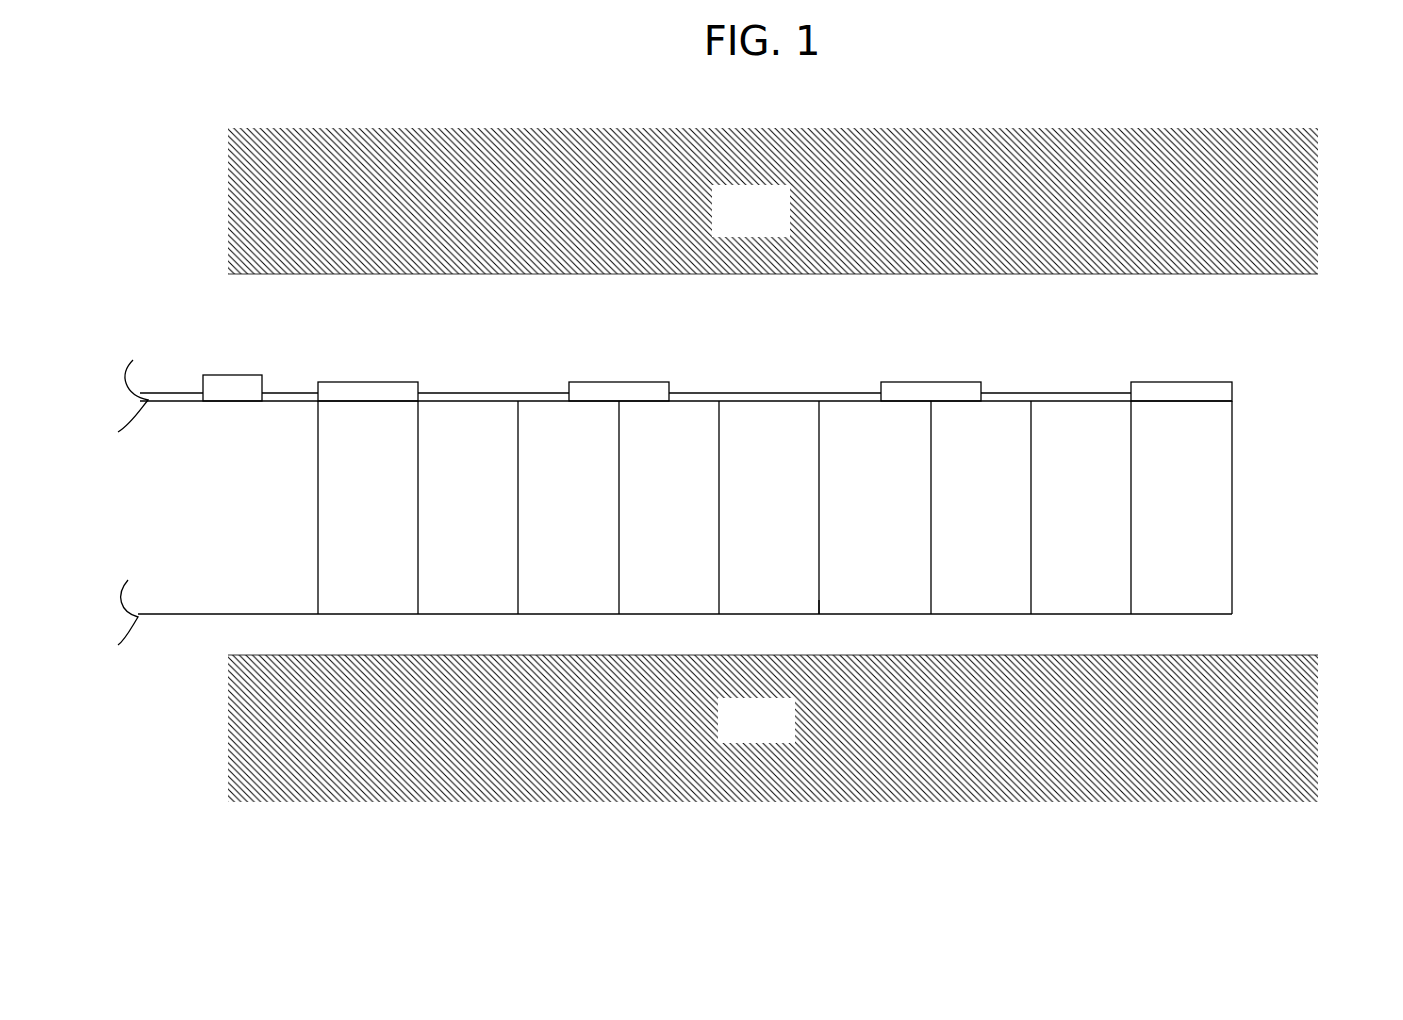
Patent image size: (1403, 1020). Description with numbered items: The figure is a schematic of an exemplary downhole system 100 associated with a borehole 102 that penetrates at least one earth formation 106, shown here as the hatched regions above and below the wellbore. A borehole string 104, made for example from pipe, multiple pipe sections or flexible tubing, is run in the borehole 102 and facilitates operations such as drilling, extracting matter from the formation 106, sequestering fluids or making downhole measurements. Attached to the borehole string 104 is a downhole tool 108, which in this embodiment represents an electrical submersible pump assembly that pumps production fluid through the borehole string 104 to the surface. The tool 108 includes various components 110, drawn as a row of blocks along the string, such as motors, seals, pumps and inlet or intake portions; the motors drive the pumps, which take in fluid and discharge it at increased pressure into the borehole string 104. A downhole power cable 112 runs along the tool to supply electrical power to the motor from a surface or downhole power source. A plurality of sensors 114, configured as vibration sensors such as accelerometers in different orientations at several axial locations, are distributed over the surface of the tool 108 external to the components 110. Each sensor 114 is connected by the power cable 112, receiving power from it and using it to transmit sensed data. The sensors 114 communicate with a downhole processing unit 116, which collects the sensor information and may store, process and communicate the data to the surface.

The downhole system 100 is at (1268, 441).
The borehole 102 is at (1287, 270).
The borehole string 104 is at (202, 598).
The earth formation 106 is at (731, 223).
The downhole tool 108 is at (821, 614).
The components 110 is at (348, 522).
The downhole power cable 112 is at (149, 392).
The sensors 114 is at (358, 380).
The downhole processing unit 116 is at (240, 387).